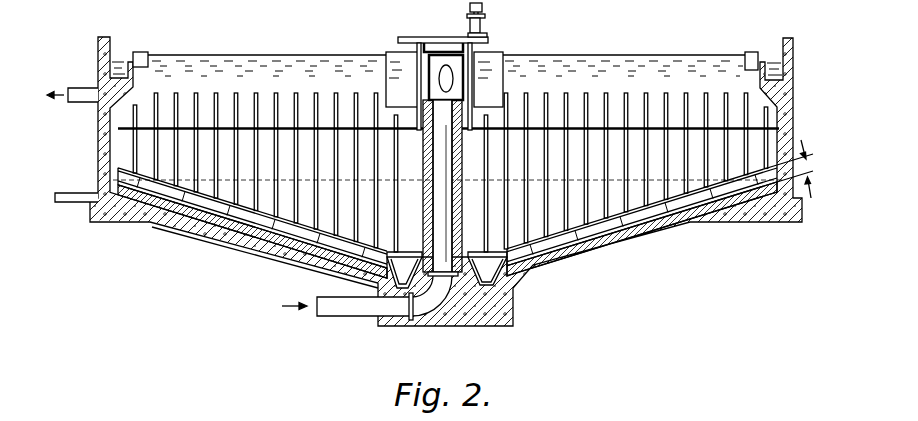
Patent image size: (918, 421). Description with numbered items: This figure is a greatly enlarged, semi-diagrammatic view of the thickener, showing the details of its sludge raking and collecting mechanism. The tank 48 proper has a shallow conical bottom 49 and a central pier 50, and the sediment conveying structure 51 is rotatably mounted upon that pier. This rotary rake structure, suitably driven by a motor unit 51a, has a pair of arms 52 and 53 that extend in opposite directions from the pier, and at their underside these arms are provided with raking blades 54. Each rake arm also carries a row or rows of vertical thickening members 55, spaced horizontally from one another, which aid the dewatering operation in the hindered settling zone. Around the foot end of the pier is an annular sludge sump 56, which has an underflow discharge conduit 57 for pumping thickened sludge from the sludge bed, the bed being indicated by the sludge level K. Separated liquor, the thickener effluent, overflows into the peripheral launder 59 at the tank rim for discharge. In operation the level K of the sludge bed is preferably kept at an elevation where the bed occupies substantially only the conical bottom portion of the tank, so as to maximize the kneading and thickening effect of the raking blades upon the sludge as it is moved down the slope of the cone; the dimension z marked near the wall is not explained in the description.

The tank 48 is at (792, 90).
The shallow conical bottom 49 is at (613, 241).
The central pier 50 is at (423, 129).
The sediment conveying structure 51 is at (476, 131).
The motor unit 51a is at (483, 24).
The rake arm 52 is at (303, 218).
The rake arm 53 is at (591, 246).
The raking blades 54 is at (242, 220).
The vertical thickening members 55 is at (236, 92).
The annular sludge sump 56 is at (514, 286).
The underflow discharge conduit 57 is at (200, 232).
The peripheral launder 59 is at (775, 58).
The sludge level K is at (595, 180).
The rake thickness dimension z is at (800, 169).